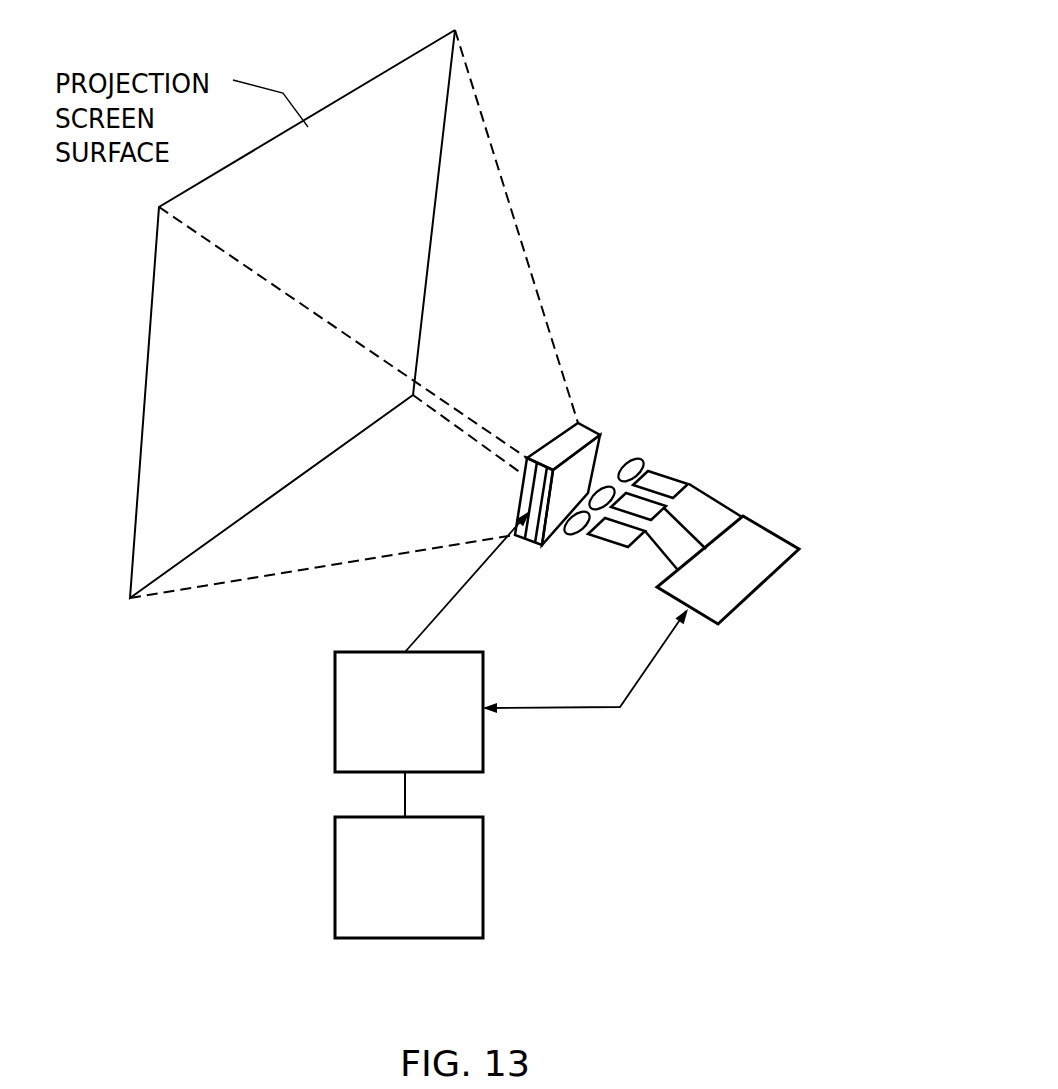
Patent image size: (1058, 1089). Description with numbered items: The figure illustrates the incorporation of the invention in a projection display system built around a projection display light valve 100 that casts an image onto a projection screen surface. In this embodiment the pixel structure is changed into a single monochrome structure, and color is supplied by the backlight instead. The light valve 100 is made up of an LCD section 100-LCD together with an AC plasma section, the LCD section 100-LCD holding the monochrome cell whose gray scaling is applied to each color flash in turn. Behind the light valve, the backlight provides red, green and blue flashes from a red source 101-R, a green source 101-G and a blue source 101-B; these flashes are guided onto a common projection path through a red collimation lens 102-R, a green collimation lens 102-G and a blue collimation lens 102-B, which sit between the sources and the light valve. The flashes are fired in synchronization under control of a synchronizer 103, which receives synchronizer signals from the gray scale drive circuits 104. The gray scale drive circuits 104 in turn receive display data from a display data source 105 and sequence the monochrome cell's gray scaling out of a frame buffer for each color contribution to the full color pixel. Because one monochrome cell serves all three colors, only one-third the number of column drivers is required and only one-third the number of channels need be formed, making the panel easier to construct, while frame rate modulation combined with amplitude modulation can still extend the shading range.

The projection display light valve 100 is at (614, 398).
The LCD section 100-LCD is at (604, 413).
The red source 101-R is at (750, 457).
The blue source 101-B is at (744, 487).
The green source 101-G is at (742, 518).
The red collimation lens 102-R is at (691, 446).
The blue collimation lens 102-B is at (716, 421).
The green collimation lens 102-G is at (588, 563).
The synchronizer 103 is at (777, 570).
The gray scale drive circuits 104 is at (470, 738).
The display data source 105 is at (473, 872).